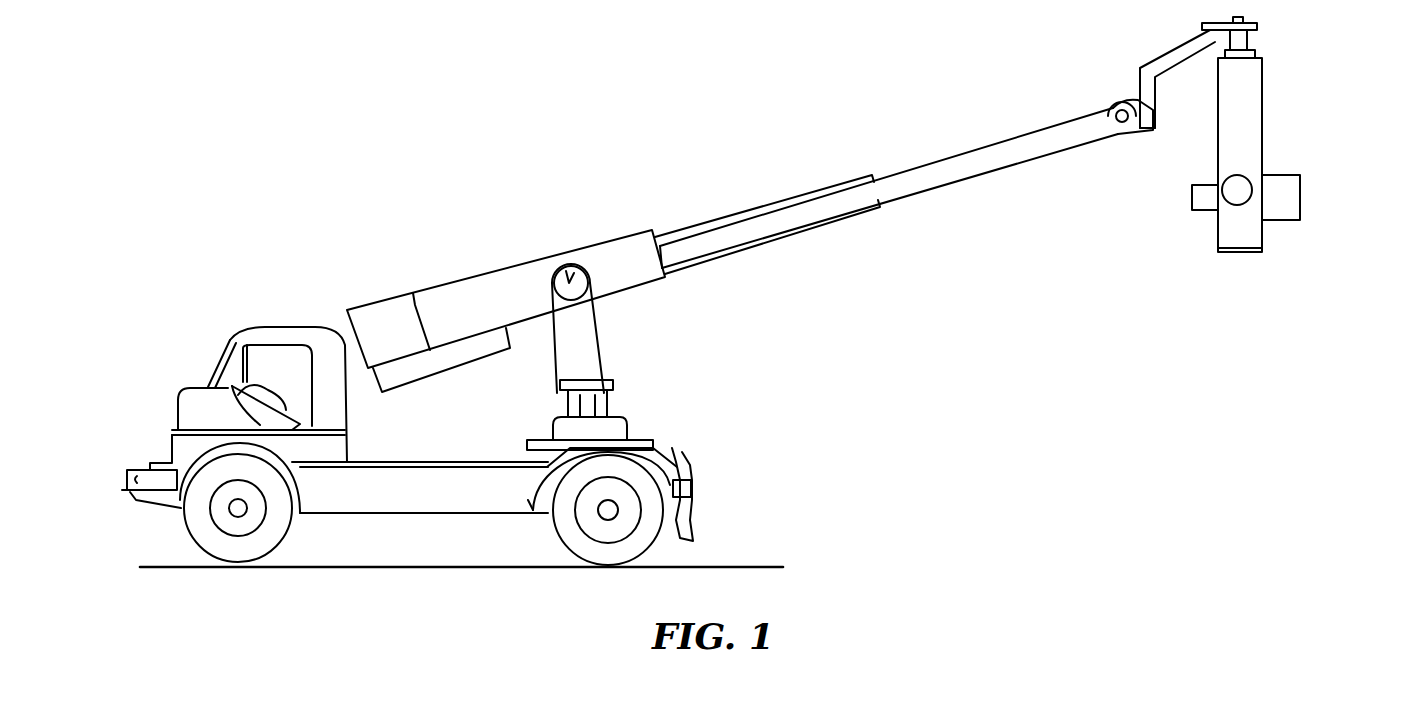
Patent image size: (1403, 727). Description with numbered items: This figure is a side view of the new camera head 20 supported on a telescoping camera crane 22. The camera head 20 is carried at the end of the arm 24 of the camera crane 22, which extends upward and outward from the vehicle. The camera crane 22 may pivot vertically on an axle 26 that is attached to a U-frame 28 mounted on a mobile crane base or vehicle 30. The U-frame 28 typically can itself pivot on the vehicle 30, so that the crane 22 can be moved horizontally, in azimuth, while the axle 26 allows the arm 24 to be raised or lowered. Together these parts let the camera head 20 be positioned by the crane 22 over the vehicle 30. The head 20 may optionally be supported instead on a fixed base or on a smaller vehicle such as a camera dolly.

The camera head 20 is at (1270, 150).
The camera crane 22 is at (689, 205).
The arm 24 is at (935, 170).
The axle 26 is at (557, 250).
The U-frame 28 is at (592, 330).
The mobile crane base or vehicle 30 is at (683, 472).